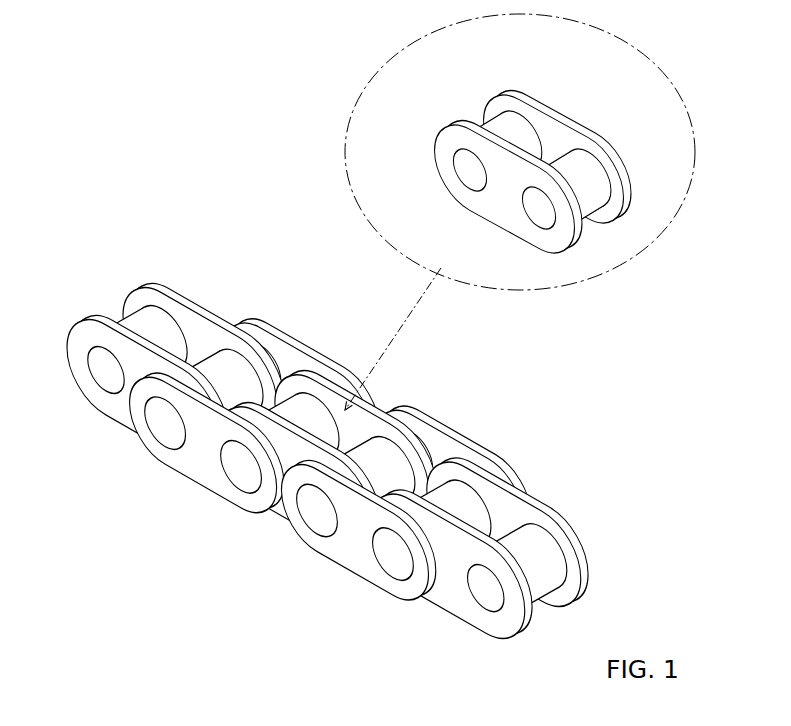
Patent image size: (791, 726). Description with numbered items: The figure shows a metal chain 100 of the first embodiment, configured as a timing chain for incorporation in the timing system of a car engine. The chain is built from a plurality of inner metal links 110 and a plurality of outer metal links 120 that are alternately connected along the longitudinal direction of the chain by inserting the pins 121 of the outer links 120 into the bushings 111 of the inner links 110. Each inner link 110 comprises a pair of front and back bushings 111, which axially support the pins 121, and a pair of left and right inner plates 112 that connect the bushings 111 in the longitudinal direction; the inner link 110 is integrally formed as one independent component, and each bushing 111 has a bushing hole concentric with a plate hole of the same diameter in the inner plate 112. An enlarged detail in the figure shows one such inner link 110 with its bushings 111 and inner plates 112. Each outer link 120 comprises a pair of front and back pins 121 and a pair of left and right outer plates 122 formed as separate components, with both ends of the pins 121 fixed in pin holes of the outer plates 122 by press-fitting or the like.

The metal chain 100 is at (367, 336).
The inner metal link 110 is at (212, 296).
The bushing 111 is at (515, 126).
The inner plate 112 is at (551, 159).
The outer metal link 120 is at (367, 353).
The pin 121 is at (315, 513).
The outer plate 122 is at (445, 437).